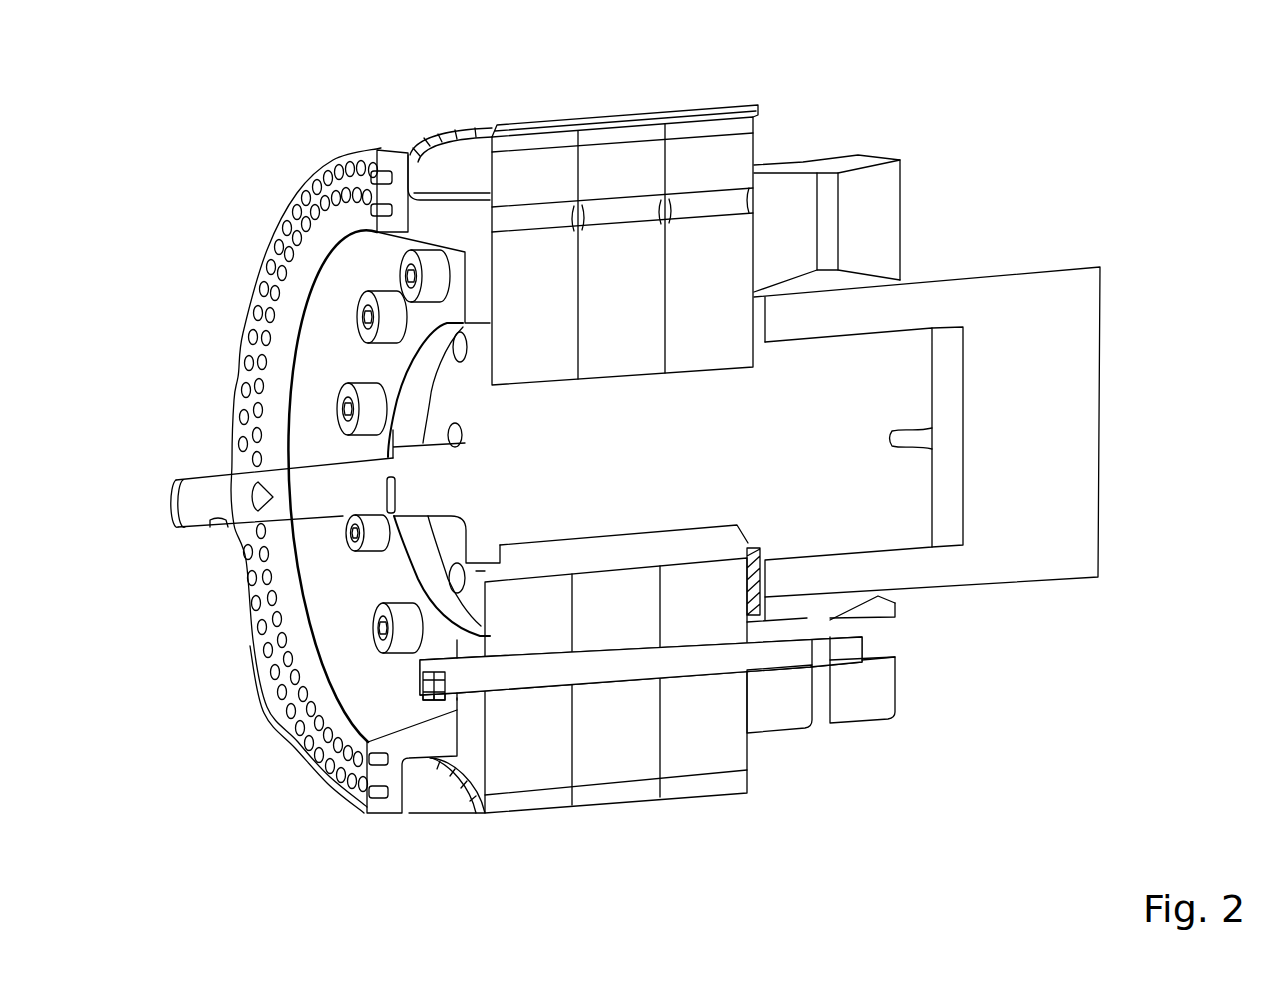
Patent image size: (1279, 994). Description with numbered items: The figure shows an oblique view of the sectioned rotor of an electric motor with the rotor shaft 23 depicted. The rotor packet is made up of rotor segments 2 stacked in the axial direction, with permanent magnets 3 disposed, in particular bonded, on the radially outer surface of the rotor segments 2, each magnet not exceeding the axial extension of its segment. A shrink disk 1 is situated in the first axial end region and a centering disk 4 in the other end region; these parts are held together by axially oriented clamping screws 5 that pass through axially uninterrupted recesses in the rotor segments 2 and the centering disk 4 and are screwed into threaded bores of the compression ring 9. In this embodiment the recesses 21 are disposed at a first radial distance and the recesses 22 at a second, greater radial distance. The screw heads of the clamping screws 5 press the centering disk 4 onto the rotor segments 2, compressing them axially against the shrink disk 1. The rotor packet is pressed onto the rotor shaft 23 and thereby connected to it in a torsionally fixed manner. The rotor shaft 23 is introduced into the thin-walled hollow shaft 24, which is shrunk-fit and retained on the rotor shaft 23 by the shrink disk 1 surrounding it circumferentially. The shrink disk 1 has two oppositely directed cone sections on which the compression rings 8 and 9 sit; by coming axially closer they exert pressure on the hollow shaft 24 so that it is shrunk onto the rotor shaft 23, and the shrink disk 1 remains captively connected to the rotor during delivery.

The shrink disk 1 is at (853, 603).
The rotor segments 2 is at (520, 753).
The permanent magnets 3 is at (693, 790).
The centering disk 4 is at (398, 167).
The clamping screws 5 is at (370, 415).
The compression ring 8 is at (782, 712).
The compression ring 9 is at (880, 703).
The recesses 21 is at (307, 687).
The recesses 22 is at (270, 642).
The rotor shaft 23 is at (770, 451).
The hollow shaft 24 is at (1010, 451).